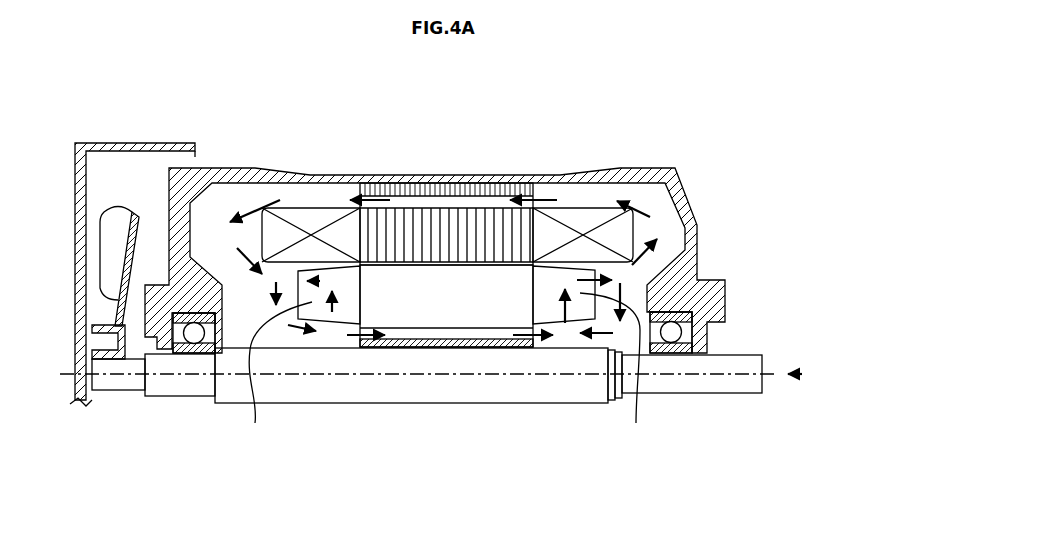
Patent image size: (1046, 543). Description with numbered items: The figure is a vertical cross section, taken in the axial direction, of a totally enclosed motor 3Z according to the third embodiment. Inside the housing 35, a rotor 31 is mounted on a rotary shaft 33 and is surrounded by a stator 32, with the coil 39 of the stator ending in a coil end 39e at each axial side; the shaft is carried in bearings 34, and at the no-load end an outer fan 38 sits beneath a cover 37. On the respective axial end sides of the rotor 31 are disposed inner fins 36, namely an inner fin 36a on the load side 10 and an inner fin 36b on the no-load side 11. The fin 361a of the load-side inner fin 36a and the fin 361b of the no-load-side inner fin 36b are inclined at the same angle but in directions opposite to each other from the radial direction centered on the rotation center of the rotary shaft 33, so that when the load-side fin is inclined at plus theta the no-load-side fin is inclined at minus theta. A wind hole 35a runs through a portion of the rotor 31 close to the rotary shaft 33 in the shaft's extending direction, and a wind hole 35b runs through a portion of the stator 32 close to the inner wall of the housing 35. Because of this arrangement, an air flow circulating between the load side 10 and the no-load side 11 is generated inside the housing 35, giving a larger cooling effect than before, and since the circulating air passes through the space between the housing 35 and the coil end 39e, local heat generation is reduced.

The totally enclosed motor 3Z is at (744, 176).
The load side 10 is at (647, 167).
The no-load side 11 is at (210, 217).
The rotor 31 is at (490, 302).
The stator 32 is at (441, 184).
The rotary shaft 33 is at (723, 392).
The bearing 34 is at (672, 333).
The housing 35 is at (697, 205).
The wind hole 35a is at (425, 337).
The wind hole 35b is at (503, 200).
The inner fin 36 is at (453, 382).
The inner fin 36a is at (560, 330).
The inner fin 36b is at (315, 330).
The fin 361a is at (623, 382).
The fin 361b is at (271, 386).
The cover 37 is at (157, 143).
The outer fan 38 is at (117, 227).
The coil 39 is at (345, 236).
The coil end 39e is at (291, 225).